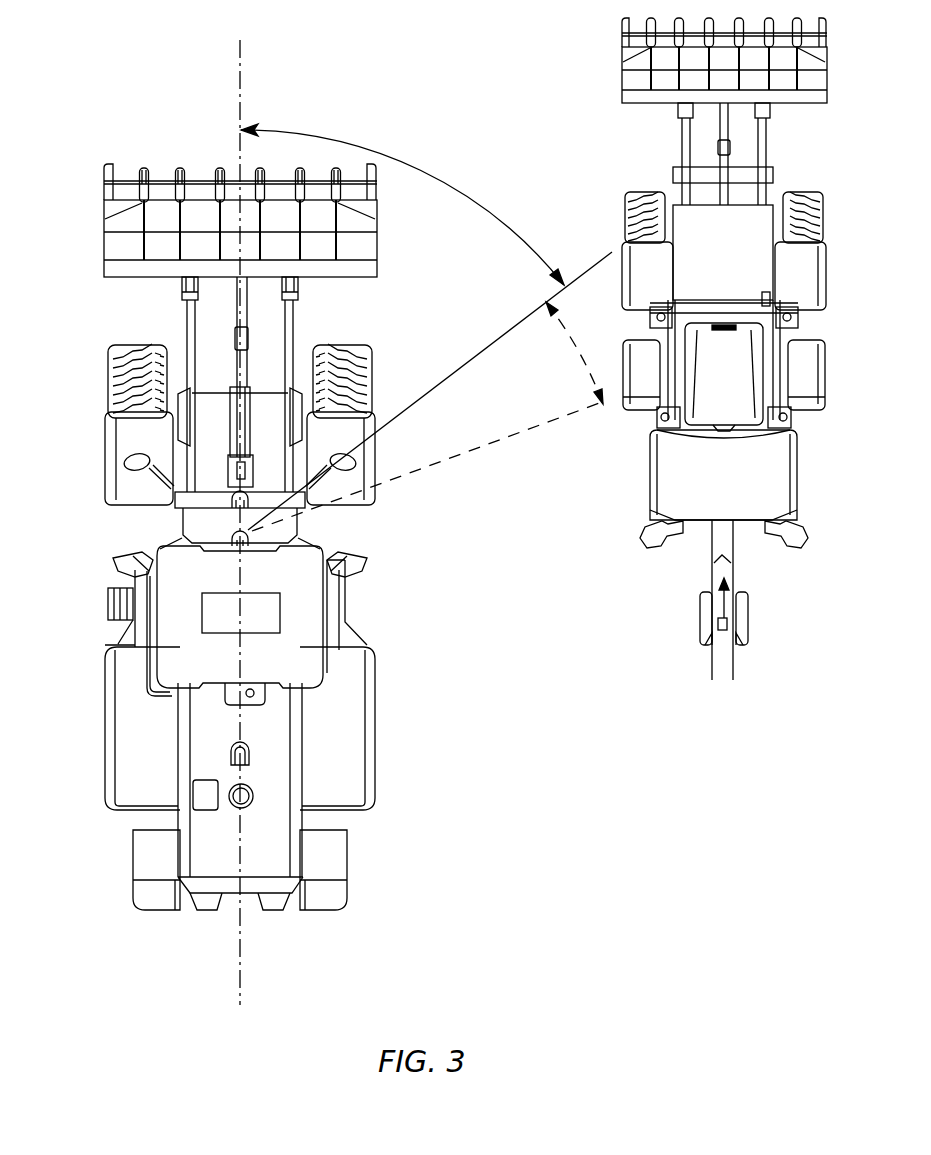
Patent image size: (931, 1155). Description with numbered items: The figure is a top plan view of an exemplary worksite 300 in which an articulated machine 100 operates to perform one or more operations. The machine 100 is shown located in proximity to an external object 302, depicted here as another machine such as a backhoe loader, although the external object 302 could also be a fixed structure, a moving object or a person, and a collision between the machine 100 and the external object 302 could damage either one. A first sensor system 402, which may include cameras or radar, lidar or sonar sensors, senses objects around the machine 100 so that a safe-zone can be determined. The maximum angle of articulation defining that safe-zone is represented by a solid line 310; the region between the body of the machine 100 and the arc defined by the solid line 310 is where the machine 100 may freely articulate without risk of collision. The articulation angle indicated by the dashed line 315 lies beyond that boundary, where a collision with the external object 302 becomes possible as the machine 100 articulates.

The worksite 300 is at (112, 76).
The machine 100 is at (110, 450).
The external object 302 is at (801, 480).
The solid line 310 is at (524, 317).
The dashed line 315 is at (572, 413).
The first sensor system 402 is at (258, 624).